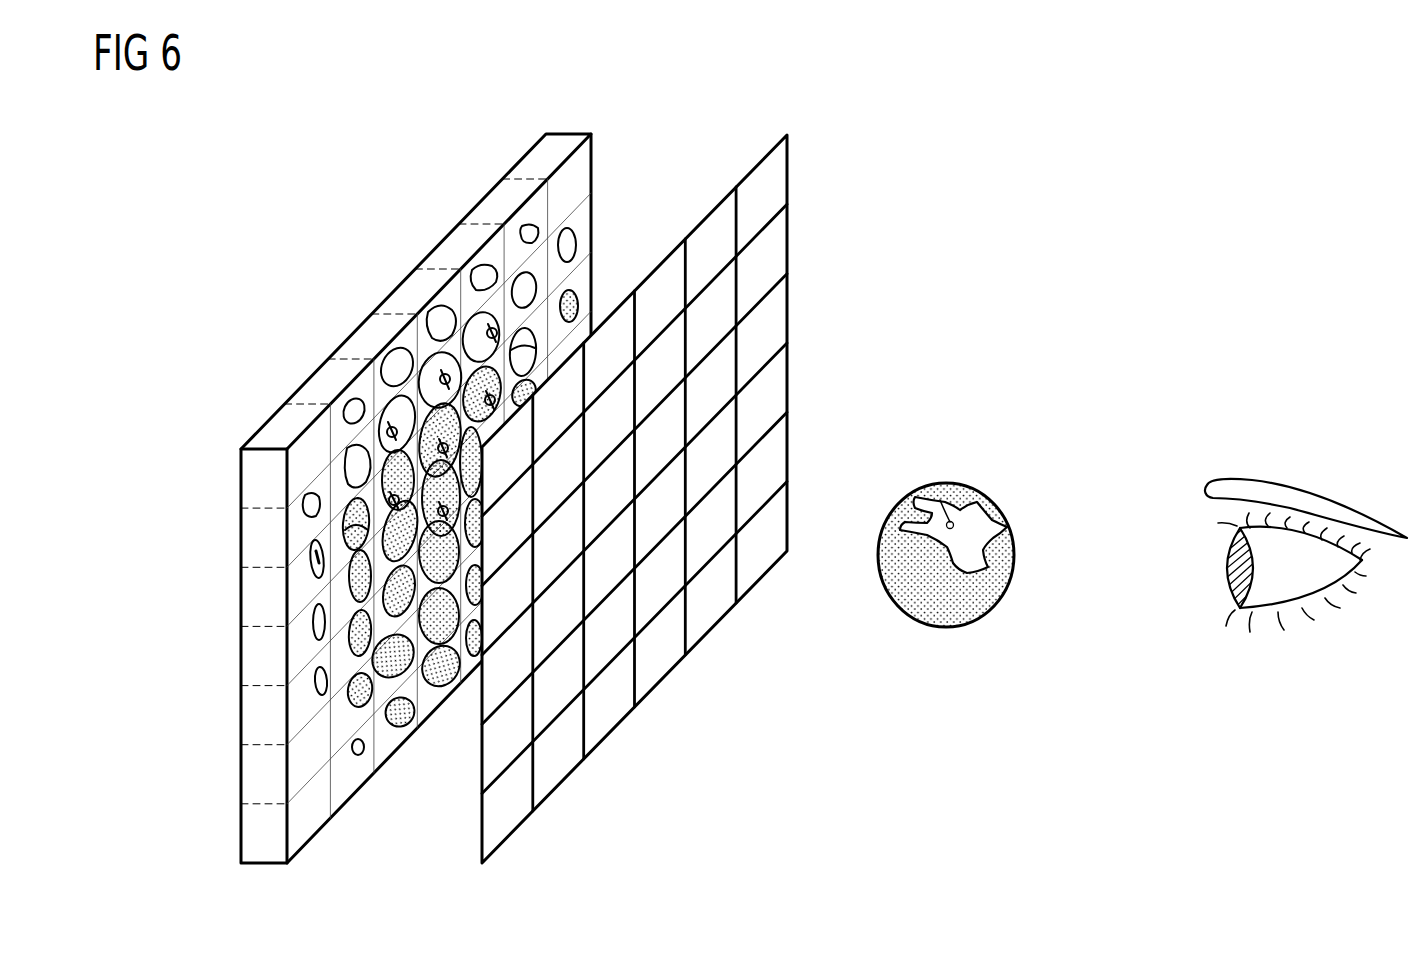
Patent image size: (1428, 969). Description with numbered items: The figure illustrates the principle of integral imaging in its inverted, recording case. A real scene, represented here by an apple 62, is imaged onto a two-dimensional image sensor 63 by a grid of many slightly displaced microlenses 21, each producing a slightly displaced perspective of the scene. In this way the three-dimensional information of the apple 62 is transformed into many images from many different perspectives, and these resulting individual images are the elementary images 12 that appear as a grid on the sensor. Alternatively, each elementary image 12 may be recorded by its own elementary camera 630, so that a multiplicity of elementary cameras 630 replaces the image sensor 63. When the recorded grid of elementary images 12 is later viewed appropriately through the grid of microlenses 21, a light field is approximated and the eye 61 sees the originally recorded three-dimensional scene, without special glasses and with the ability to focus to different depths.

The image sensor 63 is at (230, 327).
The elementary camera 630 is at (337, 377).
The elementary image 12 is at (570, 233).
The microlens 21 is at (772, 250).
The apple 62 is at (948, 600).
The eye 61 is at (1230, 583).